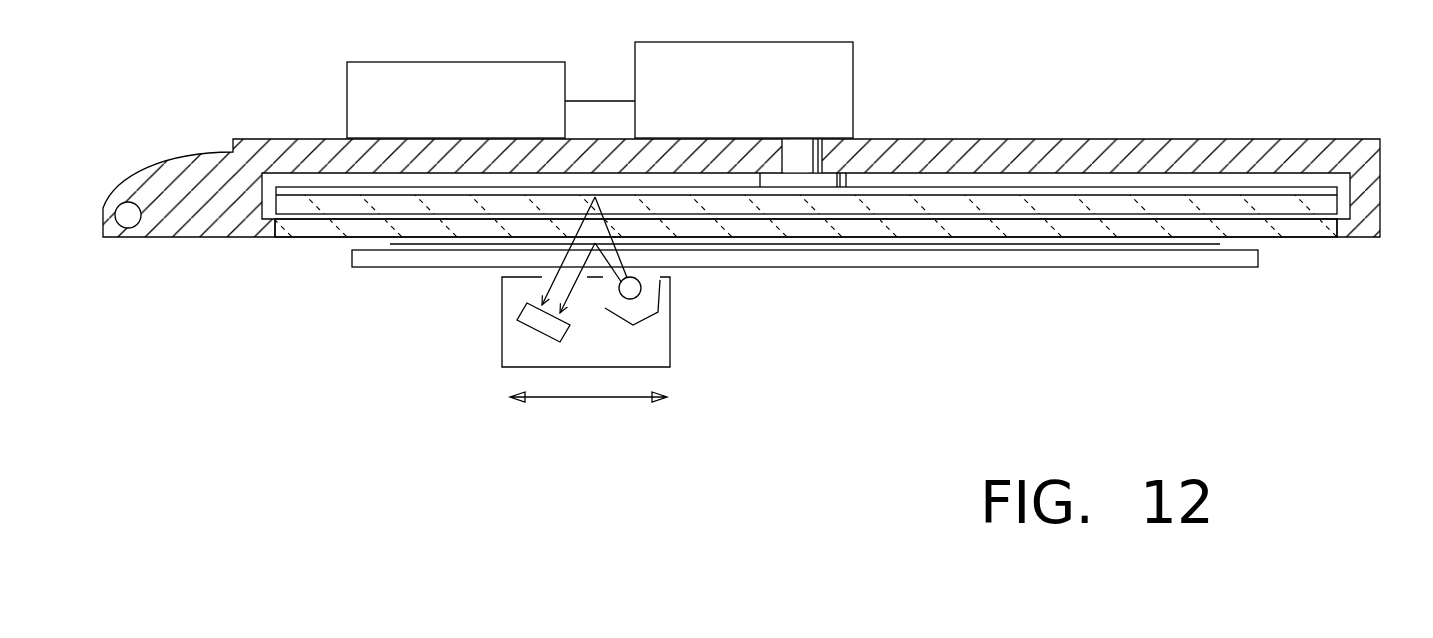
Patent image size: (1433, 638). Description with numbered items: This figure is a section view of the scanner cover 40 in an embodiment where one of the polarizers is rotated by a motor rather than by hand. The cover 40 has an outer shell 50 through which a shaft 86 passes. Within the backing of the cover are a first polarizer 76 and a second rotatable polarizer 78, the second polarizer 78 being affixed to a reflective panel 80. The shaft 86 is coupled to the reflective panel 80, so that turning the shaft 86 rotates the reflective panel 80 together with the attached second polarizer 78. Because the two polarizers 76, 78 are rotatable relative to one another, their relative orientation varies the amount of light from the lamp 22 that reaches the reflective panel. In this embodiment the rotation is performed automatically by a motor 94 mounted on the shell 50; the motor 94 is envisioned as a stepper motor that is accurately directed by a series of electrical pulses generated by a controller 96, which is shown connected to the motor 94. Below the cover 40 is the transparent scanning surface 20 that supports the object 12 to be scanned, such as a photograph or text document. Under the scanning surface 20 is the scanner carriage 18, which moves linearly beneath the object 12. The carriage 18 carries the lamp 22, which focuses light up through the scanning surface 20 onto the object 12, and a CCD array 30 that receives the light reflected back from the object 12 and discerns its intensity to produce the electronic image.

The cover 40 is at (196, 78).
The shell 50 is at (295, 140).
The first polarizer 76 is at (301, 238).
The second rotatable polarizer 78 is at (1274, 209).
The reflective panel 80 is at (1333, 190).
The shaft 86 is at (786, 149).
The controller 96 is at (461, 62).
The motor 94 is at (752, 42).
The object 12 is at (830, 247).
The transparent scanning surface 20 is at (394, 258).
The scanner carriage 18 is at (502, 353).
The lamp 22 is at (645, 298).
The CCD array 30 is at (566, 333).